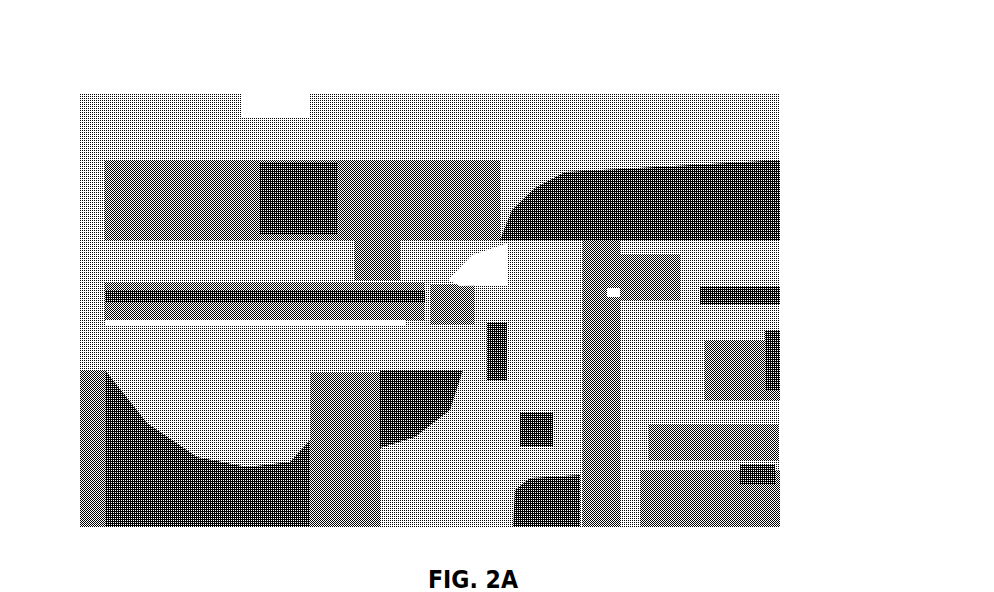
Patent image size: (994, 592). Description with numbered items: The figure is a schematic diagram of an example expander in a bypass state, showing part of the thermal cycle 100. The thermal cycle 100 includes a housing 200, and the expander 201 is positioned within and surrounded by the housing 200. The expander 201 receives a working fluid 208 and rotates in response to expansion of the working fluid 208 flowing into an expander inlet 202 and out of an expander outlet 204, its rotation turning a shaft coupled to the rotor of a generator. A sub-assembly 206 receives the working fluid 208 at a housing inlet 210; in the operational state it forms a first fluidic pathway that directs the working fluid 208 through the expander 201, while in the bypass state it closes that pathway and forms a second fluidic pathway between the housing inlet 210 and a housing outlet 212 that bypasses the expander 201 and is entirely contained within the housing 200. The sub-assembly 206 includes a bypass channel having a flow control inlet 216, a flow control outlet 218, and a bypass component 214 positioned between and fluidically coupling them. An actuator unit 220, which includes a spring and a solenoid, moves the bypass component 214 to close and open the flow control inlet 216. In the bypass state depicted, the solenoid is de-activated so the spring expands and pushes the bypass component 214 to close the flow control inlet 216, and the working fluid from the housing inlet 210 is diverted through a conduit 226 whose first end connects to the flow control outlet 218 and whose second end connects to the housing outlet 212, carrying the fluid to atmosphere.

The thermal cycle 100 is at (150, 72).
The housing 200 is at (358, 143).
The expander 201 is at (493, 490).
The expander inlet 202 is at (560, 235).
The expander outlet 204 is at (310, 440).
The sub-assembly 206 is at (397, 240).
The working fluid 208 is at (560, 170).
The housing inlet 210 is at (758, 190).
The housing outlet 212 is at (105, 322).
The bypass component 214 is at (425, 303).
The flow control inlet 216 is at (500, 240).
The flow control outlet 218 is at (465, 278).
The actuator unit 220 is at (385, 240).
The conduit 226 is at (197, 325).